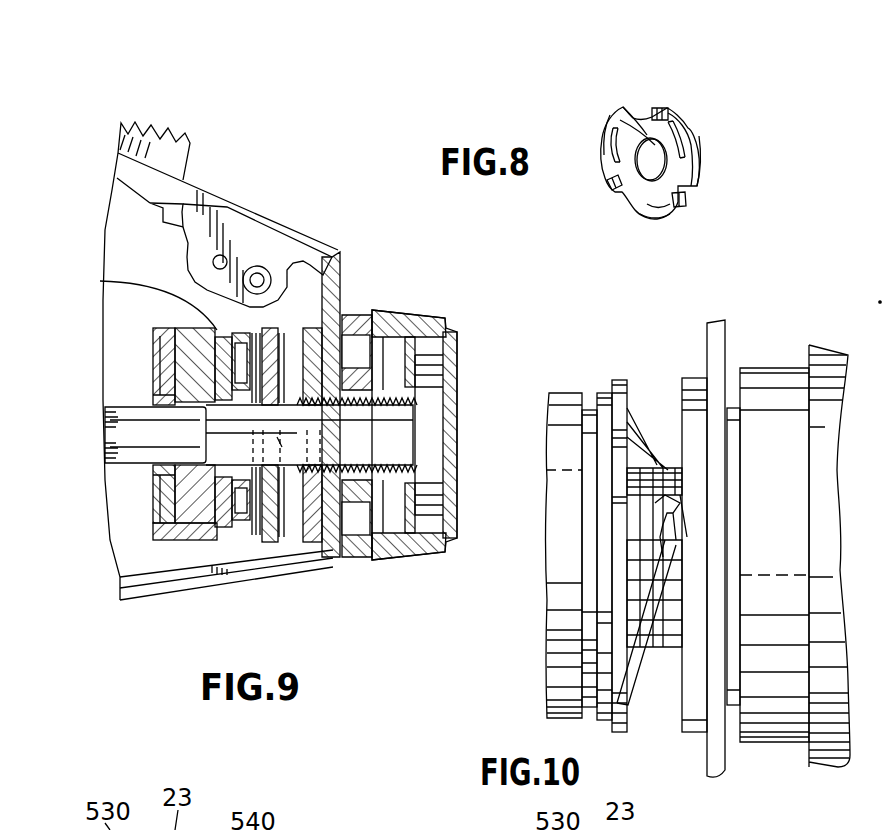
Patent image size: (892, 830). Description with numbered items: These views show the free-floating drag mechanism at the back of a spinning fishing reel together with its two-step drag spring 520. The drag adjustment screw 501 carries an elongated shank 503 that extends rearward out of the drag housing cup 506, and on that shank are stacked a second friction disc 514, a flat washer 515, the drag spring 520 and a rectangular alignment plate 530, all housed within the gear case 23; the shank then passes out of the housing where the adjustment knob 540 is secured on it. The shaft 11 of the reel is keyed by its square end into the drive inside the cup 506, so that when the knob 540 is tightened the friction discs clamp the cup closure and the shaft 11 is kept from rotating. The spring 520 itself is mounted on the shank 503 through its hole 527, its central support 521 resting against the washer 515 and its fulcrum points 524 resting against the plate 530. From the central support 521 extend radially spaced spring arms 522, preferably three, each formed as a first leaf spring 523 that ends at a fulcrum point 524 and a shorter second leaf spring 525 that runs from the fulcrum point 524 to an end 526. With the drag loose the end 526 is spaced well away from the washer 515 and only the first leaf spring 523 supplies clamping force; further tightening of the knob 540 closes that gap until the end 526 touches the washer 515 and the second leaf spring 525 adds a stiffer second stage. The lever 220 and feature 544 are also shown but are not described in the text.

In FIG. 9, the shaft 11 is at (108, 440).
In FIG. 9, the gear case 23 is at (210, 213).
In FIG. 9, the lever arm 220 is at (165, 152).
In FIG. 9, the drag adjustment screw 501 is at (225, 322).
In FIG. 9, the shank 503 is at (352, 540).
In FIG. 9, the drag housing cup 506 is at (197, 535).
In FIG. 9, the second friction disc 514 is at (257, 532).
In FIG. 9, the flat washer 515 is at (273, 530).
In FIG. 10, the flat washer 515 is at (605, 400).
In FIG. 9, the drag spring 520 is at (292, 330).
In FIG. 8, the drag spring 520 is at (687, 127).
In FIG. 8, the central support 521 is at (628, 128).
In FIG. 10, the central support 521 is at (612, 557).
In FIG. 8, the spring arms 522 is at (605, 148).
In FIG. 8, the first leaf spring 523 is at (668, 212).
In FIG. 10, the first leaf spring 523 is at (640, 672).
In FIG. 8, the fulcrum point 524 is at (685, 198).
In FIG. 10, the fulcrum point 524 is at (688, 522).
In FIG. 8, the second leaf spring 525 is at (660, 110).
In FIG. 10, the second leaf spring 525 is at (682, 497).
In FIG. 8, the end 526 is at (610, 183).
In FIG. 10, the end 526 is at (665, 500).
In FIG. 8, the hole 527 is at (650, 167).
In FIG. 9, the alignment plate 530 is at (331, 330).
In FIG. 10, the alignment plate 530 is at (700, 745).
In FIG. 9, the adjustment knob 540 is at (417, 322).
In FIG. 9, the knob bore 544 is at (462, 395).